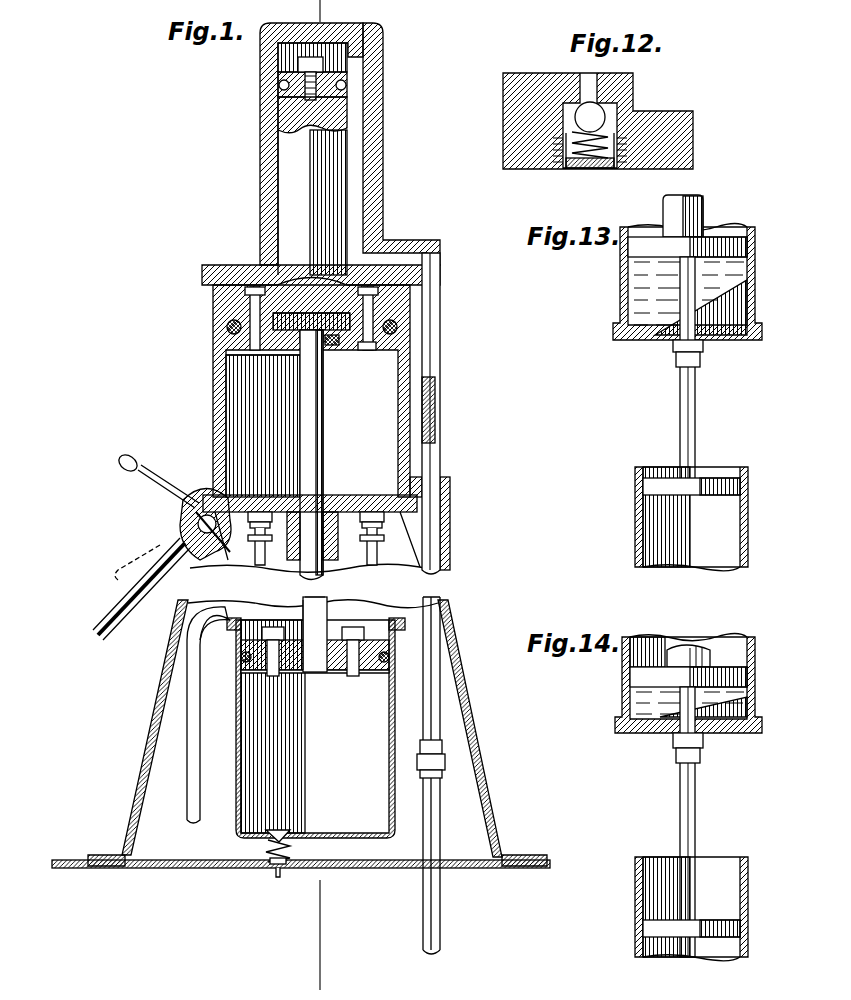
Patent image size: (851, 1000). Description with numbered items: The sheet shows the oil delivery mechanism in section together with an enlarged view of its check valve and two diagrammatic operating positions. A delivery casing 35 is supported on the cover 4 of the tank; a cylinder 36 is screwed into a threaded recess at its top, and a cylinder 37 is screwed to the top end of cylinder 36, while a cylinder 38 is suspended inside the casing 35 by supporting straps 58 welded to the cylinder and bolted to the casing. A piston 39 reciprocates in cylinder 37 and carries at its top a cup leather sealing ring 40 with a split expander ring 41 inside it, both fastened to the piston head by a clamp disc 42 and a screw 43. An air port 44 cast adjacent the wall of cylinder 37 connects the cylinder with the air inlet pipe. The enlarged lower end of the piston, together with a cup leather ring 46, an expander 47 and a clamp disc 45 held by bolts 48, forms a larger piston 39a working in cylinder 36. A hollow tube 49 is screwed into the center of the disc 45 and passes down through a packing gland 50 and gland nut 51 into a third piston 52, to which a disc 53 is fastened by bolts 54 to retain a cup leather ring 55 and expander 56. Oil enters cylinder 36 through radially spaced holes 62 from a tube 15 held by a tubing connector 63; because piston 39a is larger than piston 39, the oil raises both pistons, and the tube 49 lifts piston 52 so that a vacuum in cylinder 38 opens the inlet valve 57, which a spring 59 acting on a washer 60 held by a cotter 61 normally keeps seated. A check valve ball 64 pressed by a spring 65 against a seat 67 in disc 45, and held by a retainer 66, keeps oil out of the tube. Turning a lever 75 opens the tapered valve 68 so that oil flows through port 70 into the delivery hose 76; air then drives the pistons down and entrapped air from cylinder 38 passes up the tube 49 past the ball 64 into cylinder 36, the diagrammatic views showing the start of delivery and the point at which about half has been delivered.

In FIG. 1, the cover 4 is at (545, 868).
In FIG. 1, the tube 15 is at (385, 540).
In FIG. 1, the delivery casing 35 is at (480, 785).
In FIG. 1, the cylinder 36 is at (215, 408).
In FIG. 13, the cylinder 36 is at (755, 298).
In FIG. 14, the cylinder 36 is at (757, 703).
In FIG. 1, the cylinder 37 is at (262, 176).
In FIG. 1, the cylinder 38 is at (395, 822).
In FIG. 13, the cylinder 38 is at (636, 528).
In FIG. 14, the cylinder 38 is at (636, 898).
In FIG. 1, the piston 39 is at (340, 110).
In FIG. 13, the piston 39 is at (705, 205).
In FIG. 14, the piston 39 is at (700, 648).
In FIG. 1, the piston 39a is at (400, 315).
In FIG. 13, the piston 39a is at (750, 242).
In FIG. 14, the piston 39a is at (755, 672).
In FIG. 1, the cup leather sealing ring 40 is at (279, 84).
In FIG. 1, the split expander ring 41 is at (285, 92).
In FIG. 1, the clamp disc 42 is at (288, 65).
In FIG. 1, the screw 43 is at (325, 58).
In FIG. 1, the air port 44 is at (368, 190).
In FIG. 1, the clamp disc 45 is at (277, 356).
In FIG. 1, the cup leather ring 46 is at (228, 333).
In FIG. 1, the expander 47 is at (240, 318).
In FIG. 1, the bolts 48 is at (372, 356).
In FIG. 1, the hollow tube 49 is at (323, 410).
In FIG. 13, the hollow tube 49 is at (695, 400).
In FIG. 14, the hollow tube 49 is at (697, 813).
In FIG. 1, the packing gland 50 is at (327, 503).
In FIG. 1, the gland nut 51 is at (337, 563).
In FIG. 13, the gland nut 51 is at (703, 358).
In FIG. 14, the gland nut 51 is at (703, 757).
In FIG. 1, the third piston 52 is at (333, 640).
In FIG. 13, the third piston 52 is at (748, 483).
In FIG. 14, the third piston 52 is at (748, 925).
In FIG. 1, the disc 53 is at (340, 673).
In FIG. 1, the bolts 54 is at (348, 673).
In FIG. 1, the cup leather ring 55 is at (243, 665).
In FIG. 1, the expander 56 is at (243, 658).
In FIG. 1, the inlet valve 57 is at (284, 835).
In FIG. 1, the supporting straps 58 is at (228, 618).
In FIG. 1, the spring 59 is at (292, 858).
In FIG. 1, the washer 60 is at (266, 856).
In FIG. 1, the cotter 61 is at (275, 874).
In FIG. 1, the holes 62 is at (262, 494).
In FIG. 1, the tubing connector 63 is at (385, 513).
In FIG. 12, the check valve ball 64 is at (618, 112).
In FIG. 12, the spring 65 is at (613, 168).
In FIG. 12, the retainer 66 is at (561, 168).
In FIG. 12, the seat 67 is at (580, 102).
In FIG. 1, the valve 68 is at (196, 523).
In FIG. 1, the port 70 is at (200, 500).
In FIG. 1, the lever 75 is at (128, 458).
In FIG. 1, the delivery hose 76 is at (120, 603).